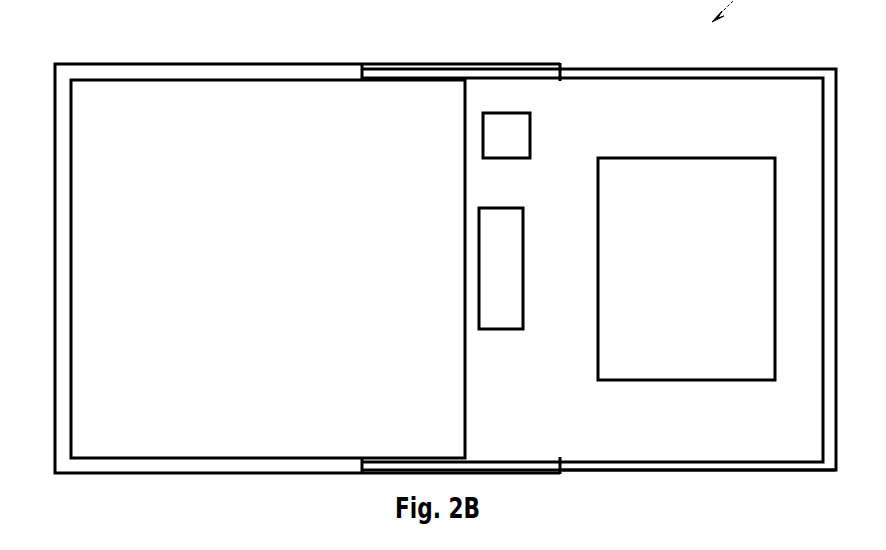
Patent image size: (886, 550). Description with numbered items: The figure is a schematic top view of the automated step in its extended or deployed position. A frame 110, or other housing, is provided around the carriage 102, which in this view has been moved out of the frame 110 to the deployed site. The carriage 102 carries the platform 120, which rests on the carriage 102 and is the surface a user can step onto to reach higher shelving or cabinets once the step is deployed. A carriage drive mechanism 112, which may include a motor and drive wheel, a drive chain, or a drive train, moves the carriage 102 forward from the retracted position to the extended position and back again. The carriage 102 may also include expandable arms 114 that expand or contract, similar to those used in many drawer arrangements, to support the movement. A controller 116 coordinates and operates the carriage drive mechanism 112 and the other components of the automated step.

The carriage 102 is at (822, 155).
The frame 110 is at (123, 63).
The carriage drive mechanism 112 is at (523, 253).
The expandable arms 114 is at (665, 472).
The controller 116 is at (532, 140).
The platform 120 is at (668, 157).